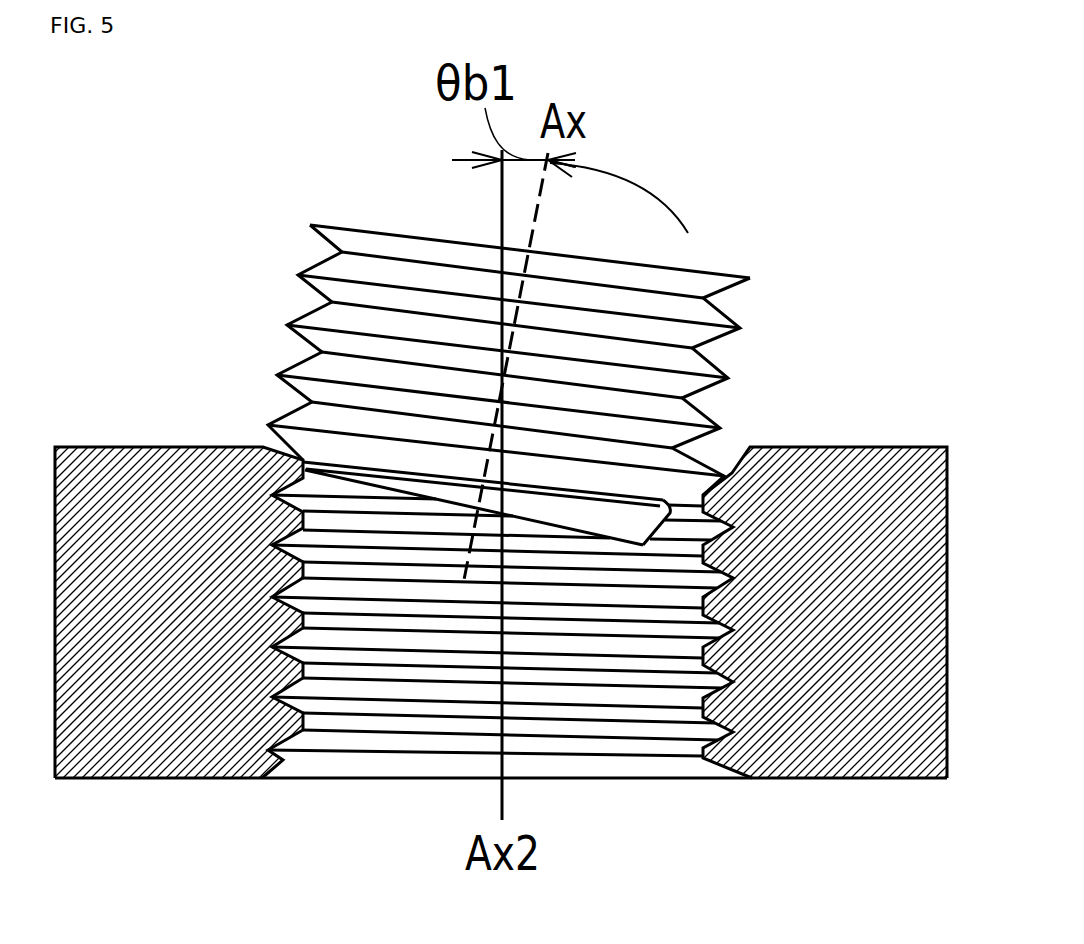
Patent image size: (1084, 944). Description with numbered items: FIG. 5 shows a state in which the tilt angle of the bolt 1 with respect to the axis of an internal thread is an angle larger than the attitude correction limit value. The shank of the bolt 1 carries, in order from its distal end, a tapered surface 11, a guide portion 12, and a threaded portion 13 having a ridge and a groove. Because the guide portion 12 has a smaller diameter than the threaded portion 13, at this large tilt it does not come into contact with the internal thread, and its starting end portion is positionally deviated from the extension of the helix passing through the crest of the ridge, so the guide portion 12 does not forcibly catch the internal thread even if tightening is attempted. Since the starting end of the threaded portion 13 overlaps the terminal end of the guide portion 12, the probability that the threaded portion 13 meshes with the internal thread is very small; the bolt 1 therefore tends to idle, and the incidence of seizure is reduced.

The bolt 1 is at (235, 226).
The tapered surface 11 is at (340, 482).
The guide portion 12 is at (640, 511).
The threaded portion 13 is at (730, 378).